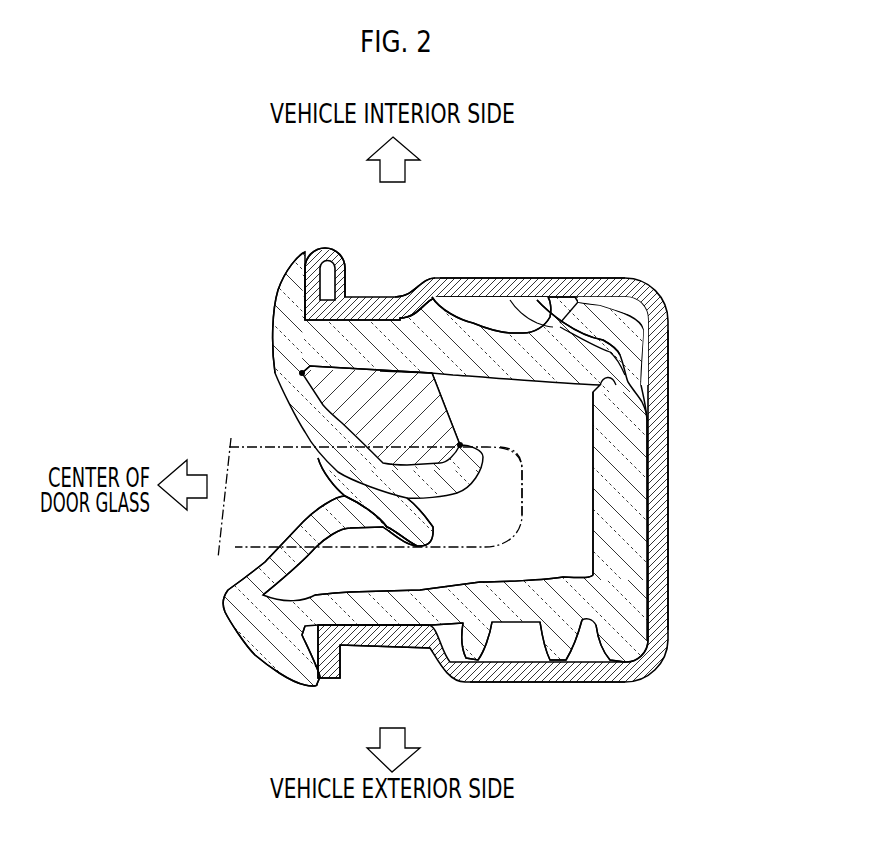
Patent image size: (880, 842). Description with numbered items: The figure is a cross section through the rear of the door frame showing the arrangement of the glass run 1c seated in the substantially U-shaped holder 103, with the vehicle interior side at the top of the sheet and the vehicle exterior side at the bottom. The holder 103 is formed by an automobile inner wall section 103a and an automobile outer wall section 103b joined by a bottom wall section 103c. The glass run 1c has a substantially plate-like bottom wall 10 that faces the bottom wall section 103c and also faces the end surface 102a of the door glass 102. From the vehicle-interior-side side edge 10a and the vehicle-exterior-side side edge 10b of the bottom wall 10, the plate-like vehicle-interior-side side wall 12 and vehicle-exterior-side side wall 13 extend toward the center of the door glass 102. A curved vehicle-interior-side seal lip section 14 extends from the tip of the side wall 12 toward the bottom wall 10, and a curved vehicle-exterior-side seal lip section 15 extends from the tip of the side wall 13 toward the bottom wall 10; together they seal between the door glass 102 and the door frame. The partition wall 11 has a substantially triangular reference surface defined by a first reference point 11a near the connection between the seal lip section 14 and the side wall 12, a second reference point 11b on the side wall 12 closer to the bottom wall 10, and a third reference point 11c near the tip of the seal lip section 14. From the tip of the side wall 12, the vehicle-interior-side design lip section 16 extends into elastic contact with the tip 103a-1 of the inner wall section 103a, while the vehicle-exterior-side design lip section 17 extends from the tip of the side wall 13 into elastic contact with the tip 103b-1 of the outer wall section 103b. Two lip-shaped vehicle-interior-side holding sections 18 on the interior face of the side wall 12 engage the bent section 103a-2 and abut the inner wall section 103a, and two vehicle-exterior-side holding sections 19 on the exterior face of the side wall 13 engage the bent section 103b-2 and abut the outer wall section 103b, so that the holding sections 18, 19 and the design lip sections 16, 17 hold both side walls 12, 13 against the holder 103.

The glass run 1c is at (250, 338).
The bottom wall 10 is at (606, 490).
The vehicle-interior-side side edge 10a is at (567, 330).
The vehicle-exterior-side side edge 10b is at (597, 661).
The partition wall 11 is at (450, 406).
The first reference point 11a is at (297, 374).
The second reference point 11b is at (436, 370).
The third reference point 11c is at (465, 444).
The vehicle-interior-side side wall 12 is at (357, 340).
The vehicle-exterior-side side wall 13 is at (387, 603).
The vehicle-interior-side seal lip section 14 is at (385, 466).
The vehicle-exterior-side seal lip section 15 is at (312, 523).
The vehicle-interior-side design lip section 16 is at (294, 282).
The vehicle-exterior-side design lip section 17 is at (262, 660).
The vehicle-interior-side holding sections 18 is at (500, 280).
The vehicle-exterior-side holding sections 19 is at (552, 654).
The door glass 102 is at (517, 520).
The end surface 102a is at (521, 457).
The holder 103 is at (734, 300).
The automobile inner wall section 103a is at (638, 306).
The tip of automobile inner wall section 103a-1 is at (328, 250).
The bent section 103a-2 is at (400, 306).
The automobile outer wall section 103b is at (640, 633).
The tip of automobile outer wall section 103b-1 is at (322, 670).
The bent section 103b-2 is at (438, 650).
The bottom wall section 103c is at (660, 479).